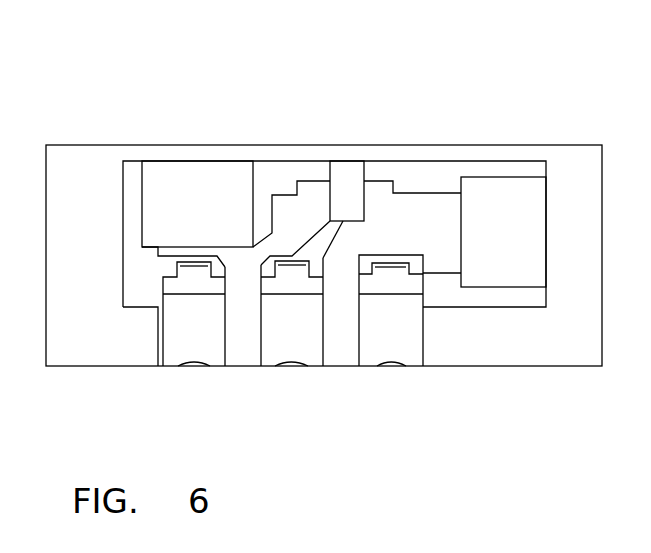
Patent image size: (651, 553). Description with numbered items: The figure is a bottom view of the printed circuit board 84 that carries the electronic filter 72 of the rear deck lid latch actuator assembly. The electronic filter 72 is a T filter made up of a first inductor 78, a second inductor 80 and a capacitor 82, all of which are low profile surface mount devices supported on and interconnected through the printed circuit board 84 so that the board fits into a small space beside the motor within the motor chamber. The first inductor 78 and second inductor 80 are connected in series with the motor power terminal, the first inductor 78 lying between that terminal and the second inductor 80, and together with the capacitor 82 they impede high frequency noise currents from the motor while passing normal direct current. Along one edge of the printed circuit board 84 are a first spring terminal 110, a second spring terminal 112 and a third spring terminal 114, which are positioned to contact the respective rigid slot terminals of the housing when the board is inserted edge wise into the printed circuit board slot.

The electronic filter 72 is at (239, 161).
The first inductor 78 is at (170, 182).
The second inductor 80 is at (529, 183).
The capacitor 82 is at (349, 183).
The printed circuit board 84 is at (529, 327).
The first spring terminal 110 is at (393, 328).
The second spring terminal 112 is at (293, 348).
The third spring terminal 114 is at (193, 327).